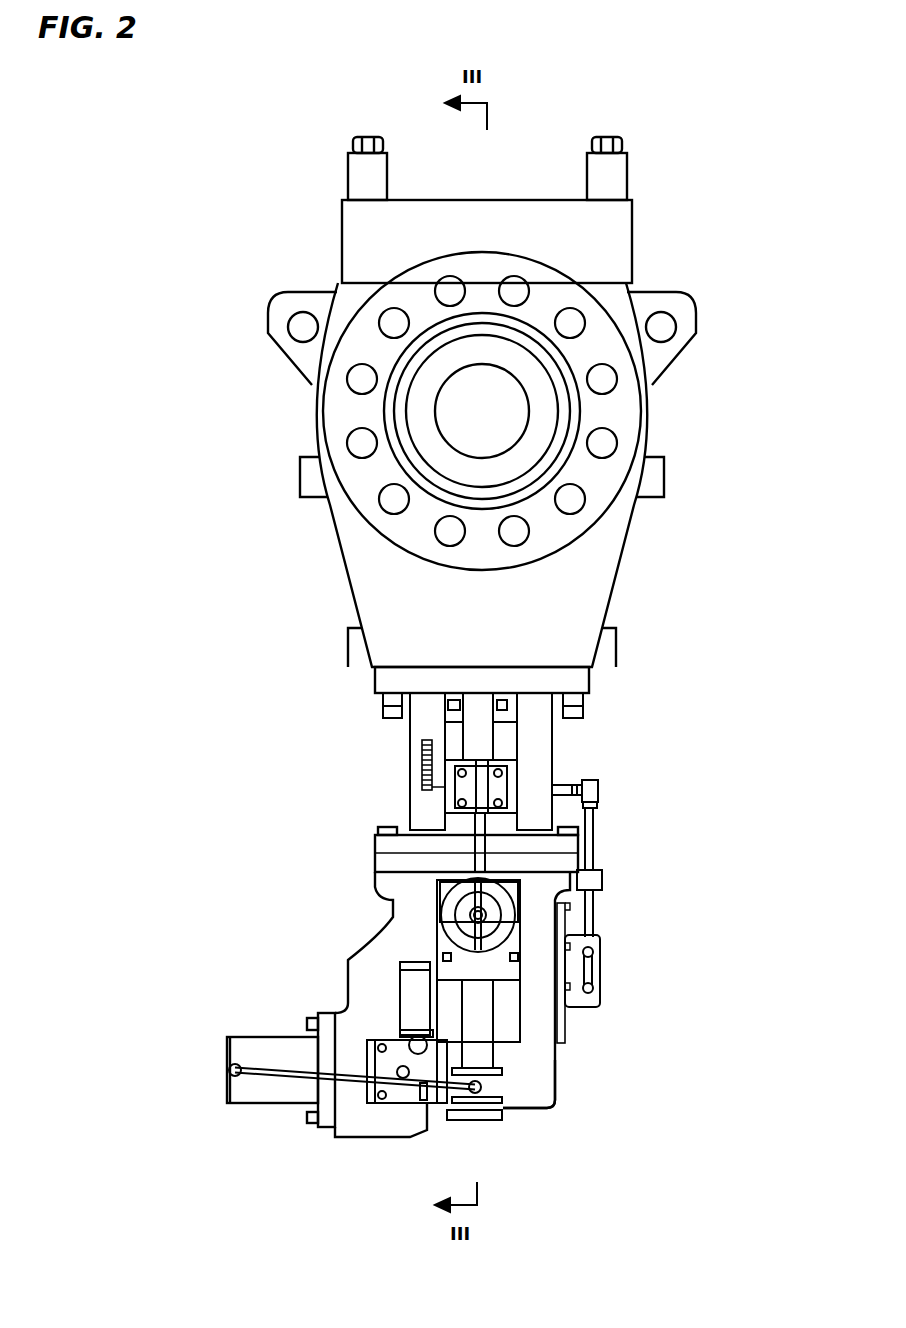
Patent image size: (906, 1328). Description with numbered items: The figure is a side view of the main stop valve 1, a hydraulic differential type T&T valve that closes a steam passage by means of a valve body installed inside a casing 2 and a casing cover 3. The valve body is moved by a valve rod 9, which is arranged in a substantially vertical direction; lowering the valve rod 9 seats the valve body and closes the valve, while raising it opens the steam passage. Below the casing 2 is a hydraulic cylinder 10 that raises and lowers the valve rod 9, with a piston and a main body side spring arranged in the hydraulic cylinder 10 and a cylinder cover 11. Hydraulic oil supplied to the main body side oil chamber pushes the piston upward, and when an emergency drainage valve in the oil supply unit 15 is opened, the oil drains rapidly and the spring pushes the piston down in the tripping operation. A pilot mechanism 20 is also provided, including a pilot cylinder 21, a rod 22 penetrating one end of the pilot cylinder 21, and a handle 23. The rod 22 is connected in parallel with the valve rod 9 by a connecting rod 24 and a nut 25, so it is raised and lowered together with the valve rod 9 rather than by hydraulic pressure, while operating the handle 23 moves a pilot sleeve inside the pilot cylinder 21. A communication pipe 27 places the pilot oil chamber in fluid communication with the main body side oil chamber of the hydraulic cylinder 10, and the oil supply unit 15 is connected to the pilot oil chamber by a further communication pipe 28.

The main stop valve 1 is at (786, 177).
The casing 2 is at (583, 553).
The casing cover 3 is at (580, 257).
The valve rod 9 is at (480, 730).
The hydraulic cylinder 10 is at (517, 1065).
The cylinder cover 11 is at (392, 858).
The oil supply unit 15 is at (280, 1087).
The pilot mechanism 20 is at (410, 898).
The pilot cylinder 21 is at (478, 1010).
The rod 22 is at (483, 853).
The handle 23 is at (512, 910).
The connecting rod 24 is at (440, 768).
The nut 25 is at (440, 788).
The communication pipe 27 is at (443, 1103).
The communication pipe 28 is at (353, 1083).